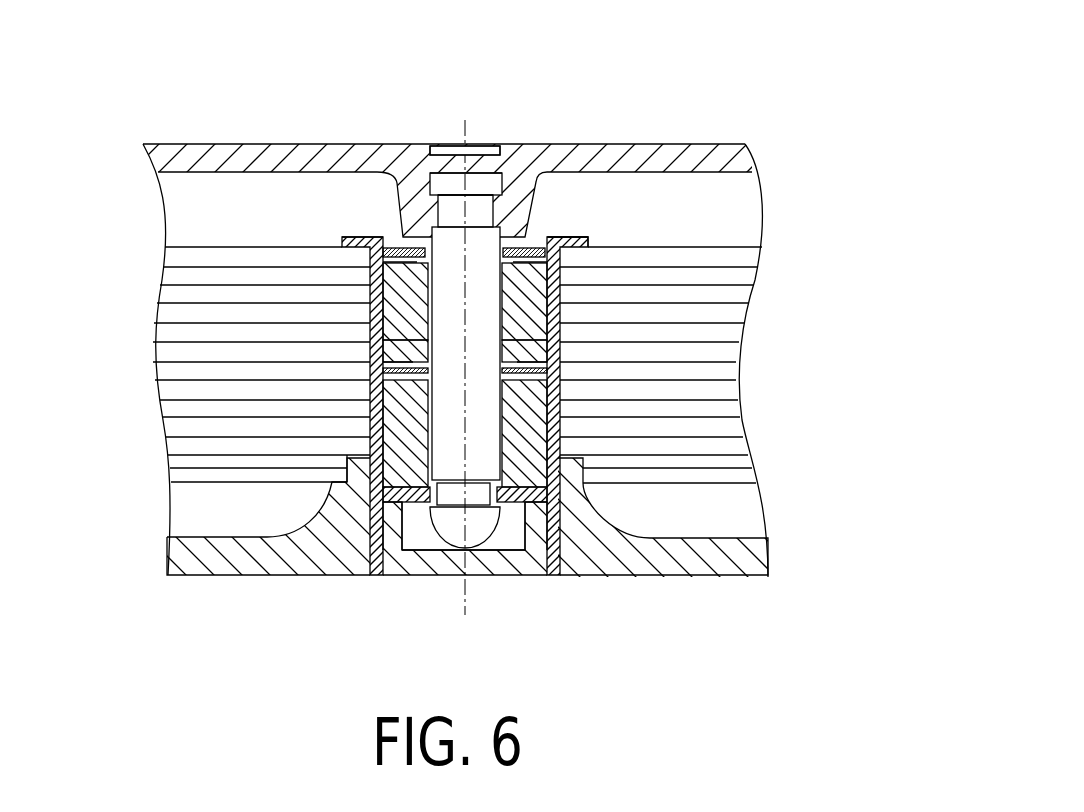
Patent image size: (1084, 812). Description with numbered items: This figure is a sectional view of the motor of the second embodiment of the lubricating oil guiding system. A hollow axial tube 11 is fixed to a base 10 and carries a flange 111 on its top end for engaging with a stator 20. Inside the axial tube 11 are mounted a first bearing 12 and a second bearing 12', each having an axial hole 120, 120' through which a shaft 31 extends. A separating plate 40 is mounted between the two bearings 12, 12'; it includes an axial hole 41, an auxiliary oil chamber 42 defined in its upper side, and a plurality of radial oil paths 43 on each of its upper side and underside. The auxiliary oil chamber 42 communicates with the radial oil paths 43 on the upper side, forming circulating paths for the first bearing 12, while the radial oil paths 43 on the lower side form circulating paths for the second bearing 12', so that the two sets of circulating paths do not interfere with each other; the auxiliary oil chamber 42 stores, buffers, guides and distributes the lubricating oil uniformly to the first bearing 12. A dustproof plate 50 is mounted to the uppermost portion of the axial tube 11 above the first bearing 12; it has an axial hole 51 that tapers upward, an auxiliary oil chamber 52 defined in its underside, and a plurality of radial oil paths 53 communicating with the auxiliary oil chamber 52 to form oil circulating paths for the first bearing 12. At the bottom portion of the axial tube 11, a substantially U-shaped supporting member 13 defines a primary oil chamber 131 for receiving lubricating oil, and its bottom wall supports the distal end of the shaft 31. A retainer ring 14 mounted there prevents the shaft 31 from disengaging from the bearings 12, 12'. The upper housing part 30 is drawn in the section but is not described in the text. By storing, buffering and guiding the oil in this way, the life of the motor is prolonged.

The base 10 is at (707, 581).
The axial tube 11 is at (535, 542).
The first bearing 12 is at (215, 292).
The axial hole 120 is at (235, 364).
The second bearing 12' is at (236, 430).
The axial hole 120' is at (229, 482).
The supporting member 13 is at (400, 545).
The primary oil chamber 131 is at (430, 548).
The retainer ring 14 is at (372, 533).
The stator 20 is at (778, 474).
The top cover 30 is at (624, 140).
The shaft 31 is at (473, 230).
The separating plate 40 is at (846, 302).
The axial hole 41 is at (540, 356).
The auxiliary oil chamber 42 is at (530, 328).
The radial oil paths 43 is at (535, 366).
The dustproof plate 50 is at (881, 157).
The axial hole 51 is at (537, 232).
The auxiliary oil chamber 52 is at (588, 246).
The radial oil paths 53 is at (548, 254).
The flange 111 is at (353, 237).